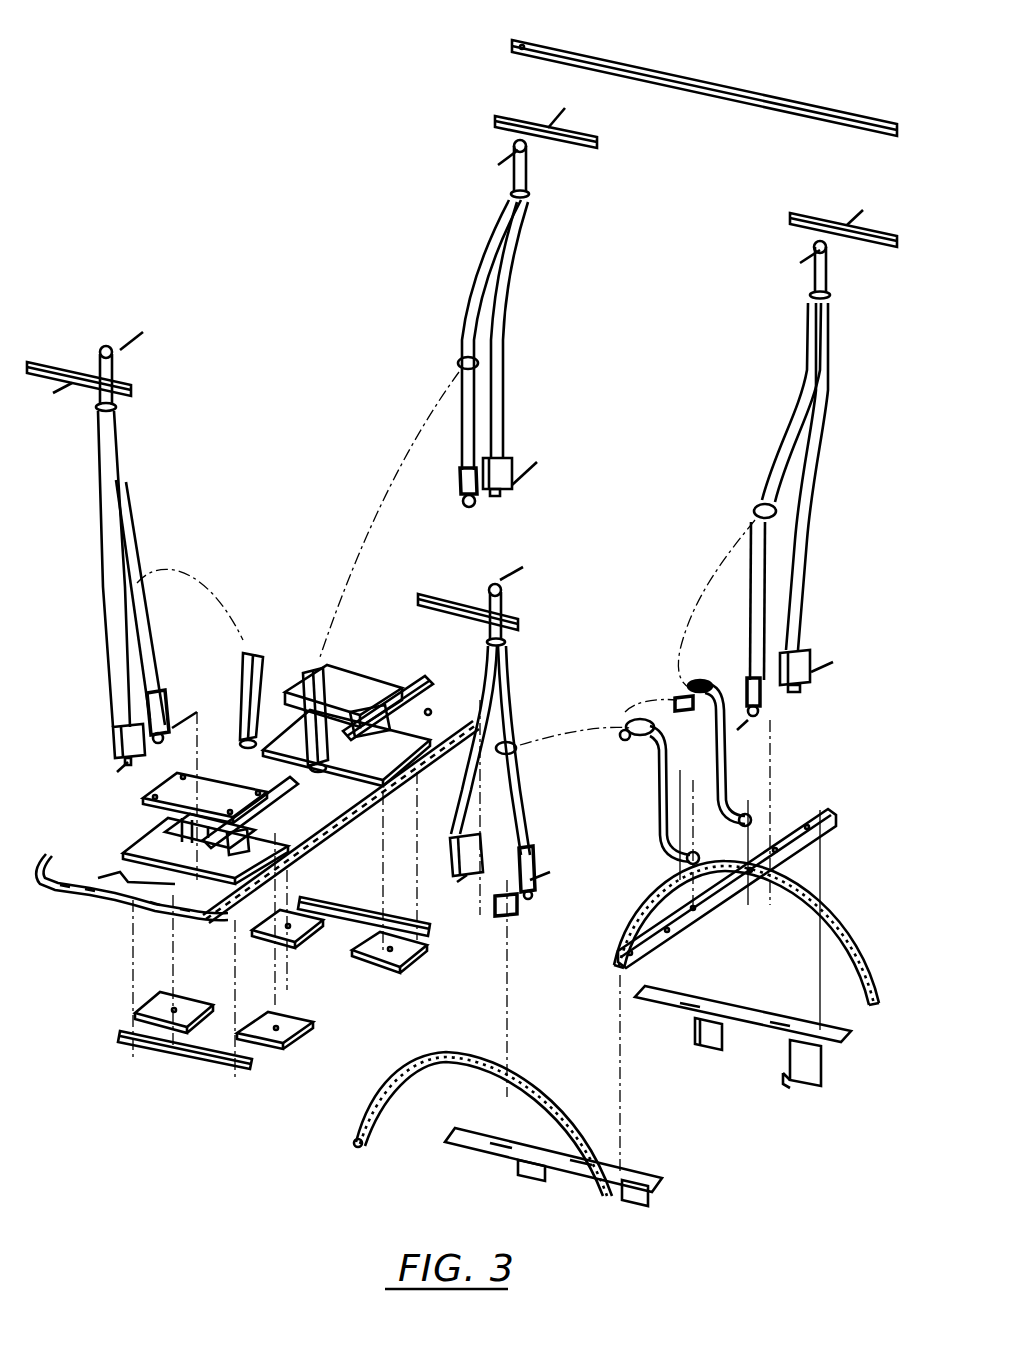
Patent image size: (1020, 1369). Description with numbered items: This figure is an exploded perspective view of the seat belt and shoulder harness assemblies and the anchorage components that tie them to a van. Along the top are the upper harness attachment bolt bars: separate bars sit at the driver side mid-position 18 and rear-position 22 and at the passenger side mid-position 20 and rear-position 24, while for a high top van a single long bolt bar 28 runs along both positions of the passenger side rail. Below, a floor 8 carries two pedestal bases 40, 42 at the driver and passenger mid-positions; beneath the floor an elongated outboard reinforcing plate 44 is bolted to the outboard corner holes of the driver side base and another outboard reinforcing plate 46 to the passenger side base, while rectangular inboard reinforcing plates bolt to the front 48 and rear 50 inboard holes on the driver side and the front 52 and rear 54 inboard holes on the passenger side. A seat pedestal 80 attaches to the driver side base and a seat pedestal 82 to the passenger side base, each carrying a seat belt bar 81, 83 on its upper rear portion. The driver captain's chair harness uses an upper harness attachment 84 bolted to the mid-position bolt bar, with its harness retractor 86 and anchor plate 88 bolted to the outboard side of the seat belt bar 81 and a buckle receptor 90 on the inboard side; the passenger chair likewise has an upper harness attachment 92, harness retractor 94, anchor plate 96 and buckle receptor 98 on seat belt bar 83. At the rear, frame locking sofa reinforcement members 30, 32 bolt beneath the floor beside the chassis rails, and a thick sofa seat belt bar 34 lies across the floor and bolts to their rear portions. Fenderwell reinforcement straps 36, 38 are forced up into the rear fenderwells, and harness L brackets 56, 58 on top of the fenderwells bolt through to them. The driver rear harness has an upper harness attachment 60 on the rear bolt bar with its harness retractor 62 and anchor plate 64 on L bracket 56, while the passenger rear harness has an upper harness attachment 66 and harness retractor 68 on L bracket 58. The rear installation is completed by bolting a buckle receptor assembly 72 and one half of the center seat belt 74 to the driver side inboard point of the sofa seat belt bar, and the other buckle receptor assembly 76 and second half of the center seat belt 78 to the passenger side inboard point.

The floor 8 is at (100, 878).
The upper harness attachment bolt bar 18 is at (44, 362).
The upper harness attachment bolt bar 20 is at (505, 128).
The upper harness attachment bolt bar 22 is at (528, 603).
The upper harness attachment bolt bar 24 is at (793, 223).
The upper harness attachment bolt bar 28 is at (757, 108).
The frame locking sofa reinforcement member 30 is at (650, 1166).
The frame locking sofa reinforcement member 32 is at (743, 1010).
The sofa seat belt bar 34 is at (821, 814).
The fenderwell reinforcement strap 36 is at (457, 1034).
The fenderwell reinforcement strap 38 is at (830, 913).
The pedestal base 40 is at (395, 816).
The pedestal base 42 is at (428, 711).
The outboard reinforcing plate 44 is at (193, 1053).
The outboard reinforcing plate 46 is at (333, 899).
The inboard reinforcing plate 48 is at (153, 1000).
The inboard reinforcing plate 50 is at (287, 1048).
The inboard reinforcing plate 52 is at (310, 939).
The inboard reinforcing plate 54 is at (377, 964).
The harness L bracket 56 is at (517, 912).
The harness L bracket 58 is at (765, 706).
The upper harness attachment 60 is at (497, 583).
The harness retractor 62 is at (452, 836).
The anchor plate 64 is at (537, 863).
The upper harness attachment 66 is at (813, 278).
The harness retractor 68 is at (811, 662).
The buckle receptor assembly 72 is at (627, 743).
The center seat belt 74 is at (628, 720).
The buckle receptor assembly 76 is at (708, 680).
The center seat belt 78 is at (680, 697).
The seat pedestal 80 is at (145, 797).
The seat belt bar 81 is at (295, 793).
The seat pedestal 82 is at (343, 672).
The seat belt bar 83 is at (421, 683).
The upper harness attachment 84 is at (118, 367).
The harness retractor 86 is at (113, 738).
The anchor plate 88 is at (165, 700).
The buckle receptor 90 is at (257, 650).
The upper harness attachment 92 is at (532, 181).
The harness retractor 94 is at (512, 460).
The anchor plate 96 is at (460, 490).
The buckle receptor 98 is at (303, 672).